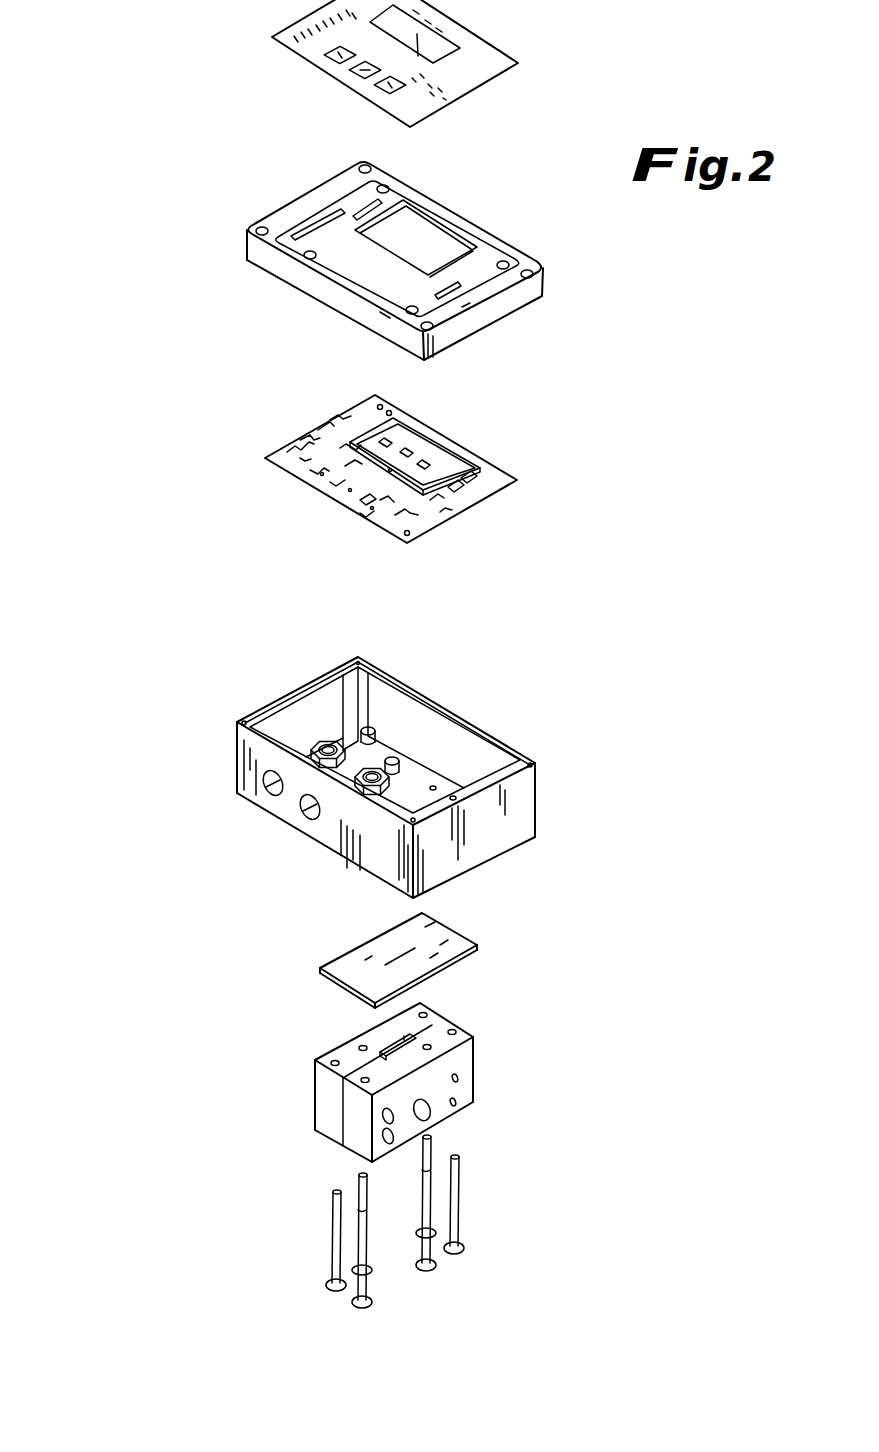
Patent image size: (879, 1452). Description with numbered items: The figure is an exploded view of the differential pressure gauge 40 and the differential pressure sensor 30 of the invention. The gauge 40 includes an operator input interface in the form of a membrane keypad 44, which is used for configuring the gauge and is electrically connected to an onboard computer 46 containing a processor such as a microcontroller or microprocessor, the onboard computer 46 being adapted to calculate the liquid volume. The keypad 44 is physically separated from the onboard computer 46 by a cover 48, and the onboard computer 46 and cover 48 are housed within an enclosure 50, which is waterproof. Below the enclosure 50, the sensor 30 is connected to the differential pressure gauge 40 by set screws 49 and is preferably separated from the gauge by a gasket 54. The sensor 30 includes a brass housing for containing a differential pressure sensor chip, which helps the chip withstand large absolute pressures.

The differential pressure gauge 40 is at (140, 524).
The membrane keypad 44 is at (487, 82).
The cover 48 is at (523, 313).
The onboard computer 46 is at (487, 498).
The enclosure 50 is at (510, 850).
The gasket 54 is at (457, 962).
The differential pressure sensor 30 is at (473, 1062).
The set screws 49 is at (462, 1200).